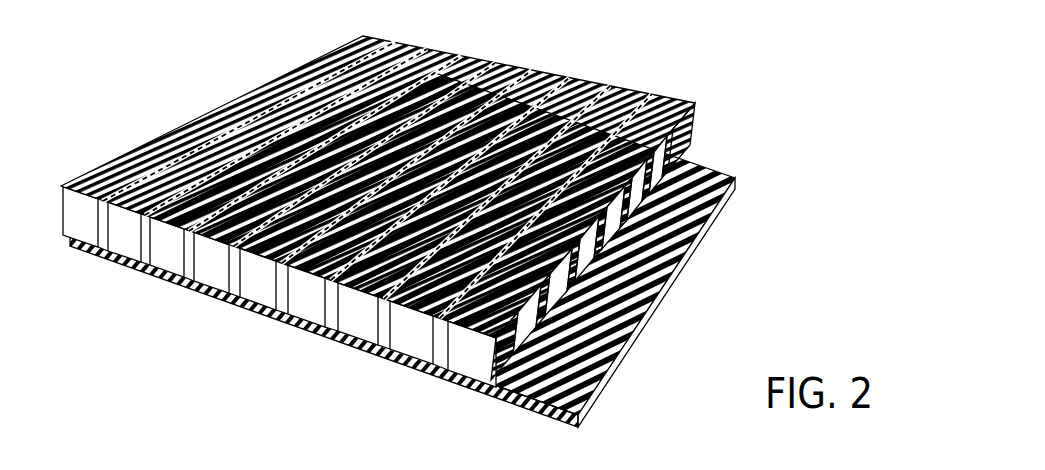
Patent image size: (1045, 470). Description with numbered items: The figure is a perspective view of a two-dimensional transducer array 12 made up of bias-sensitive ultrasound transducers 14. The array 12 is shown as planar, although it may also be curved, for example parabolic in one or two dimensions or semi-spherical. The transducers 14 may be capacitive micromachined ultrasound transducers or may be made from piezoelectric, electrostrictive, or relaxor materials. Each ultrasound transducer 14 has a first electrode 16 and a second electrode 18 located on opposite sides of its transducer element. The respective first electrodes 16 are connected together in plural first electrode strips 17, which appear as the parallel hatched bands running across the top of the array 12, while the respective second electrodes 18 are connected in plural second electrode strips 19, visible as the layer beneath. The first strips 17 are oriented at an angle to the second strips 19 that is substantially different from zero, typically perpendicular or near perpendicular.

The array 12 is at (476, 218).
The ultrasound transducer 14 is at (193, 248).
The first electrode 16 is at (128, 257).
The first electrode strip 17 is at (598, 54).
The second electrode 18 is at (200, 283).
The second electrode strip 19 is at (672, 298).